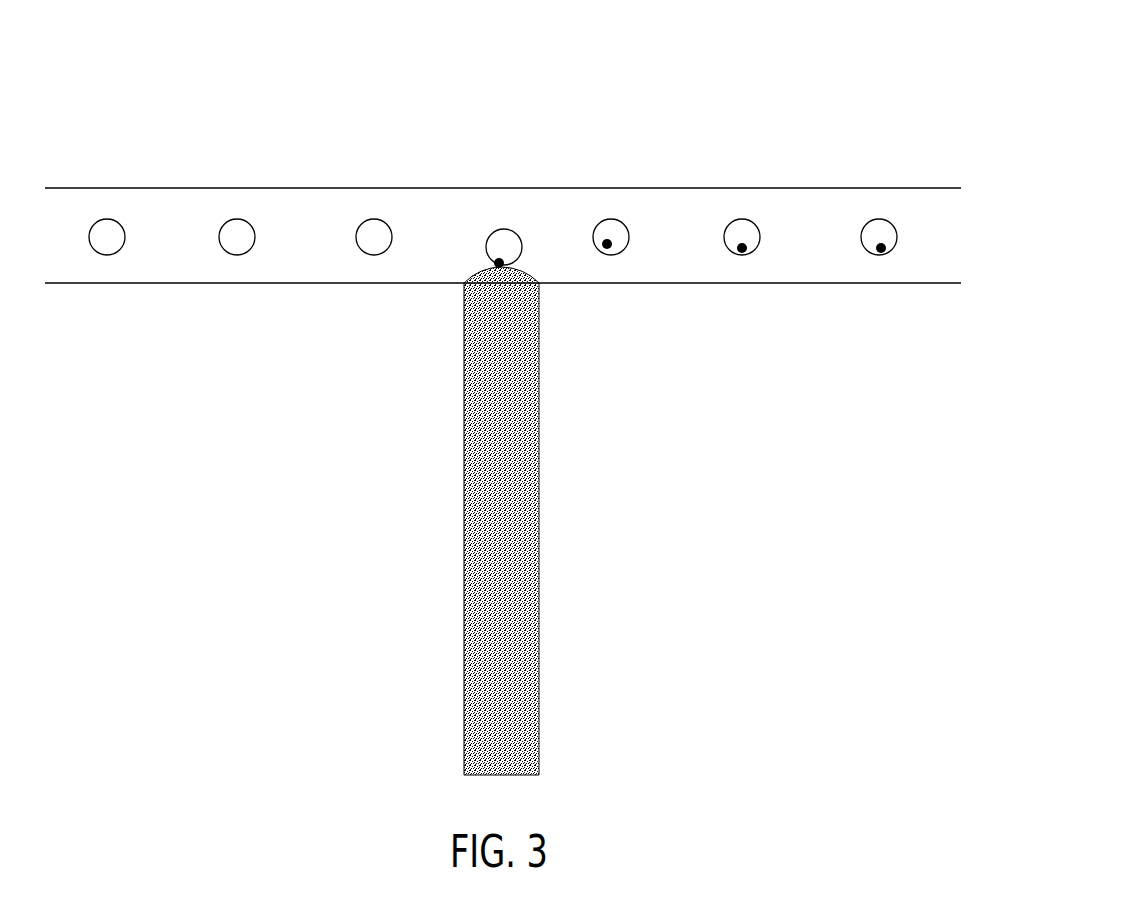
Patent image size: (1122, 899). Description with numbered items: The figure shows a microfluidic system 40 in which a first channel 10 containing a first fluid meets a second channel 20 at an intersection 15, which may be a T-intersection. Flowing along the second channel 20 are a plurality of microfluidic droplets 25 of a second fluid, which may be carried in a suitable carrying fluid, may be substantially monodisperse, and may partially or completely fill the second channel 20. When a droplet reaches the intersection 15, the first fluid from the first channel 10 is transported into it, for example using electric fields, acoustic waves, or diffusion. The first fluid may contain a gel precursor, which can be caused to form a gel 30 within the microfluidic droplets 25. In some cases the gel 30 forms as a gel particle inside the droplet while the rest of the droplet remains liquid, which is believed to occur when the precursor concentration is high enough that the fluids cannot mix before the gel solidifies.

The microfluidic system 40 is at (745, 54).
The second channel 20 is at (165, 197).
The microfluidic droplets 25 is at (102, 250).
The gel 30 is at (612, 247).
The intersection 15 is at (488, 249).
The first channel 10 is at (539, 519).